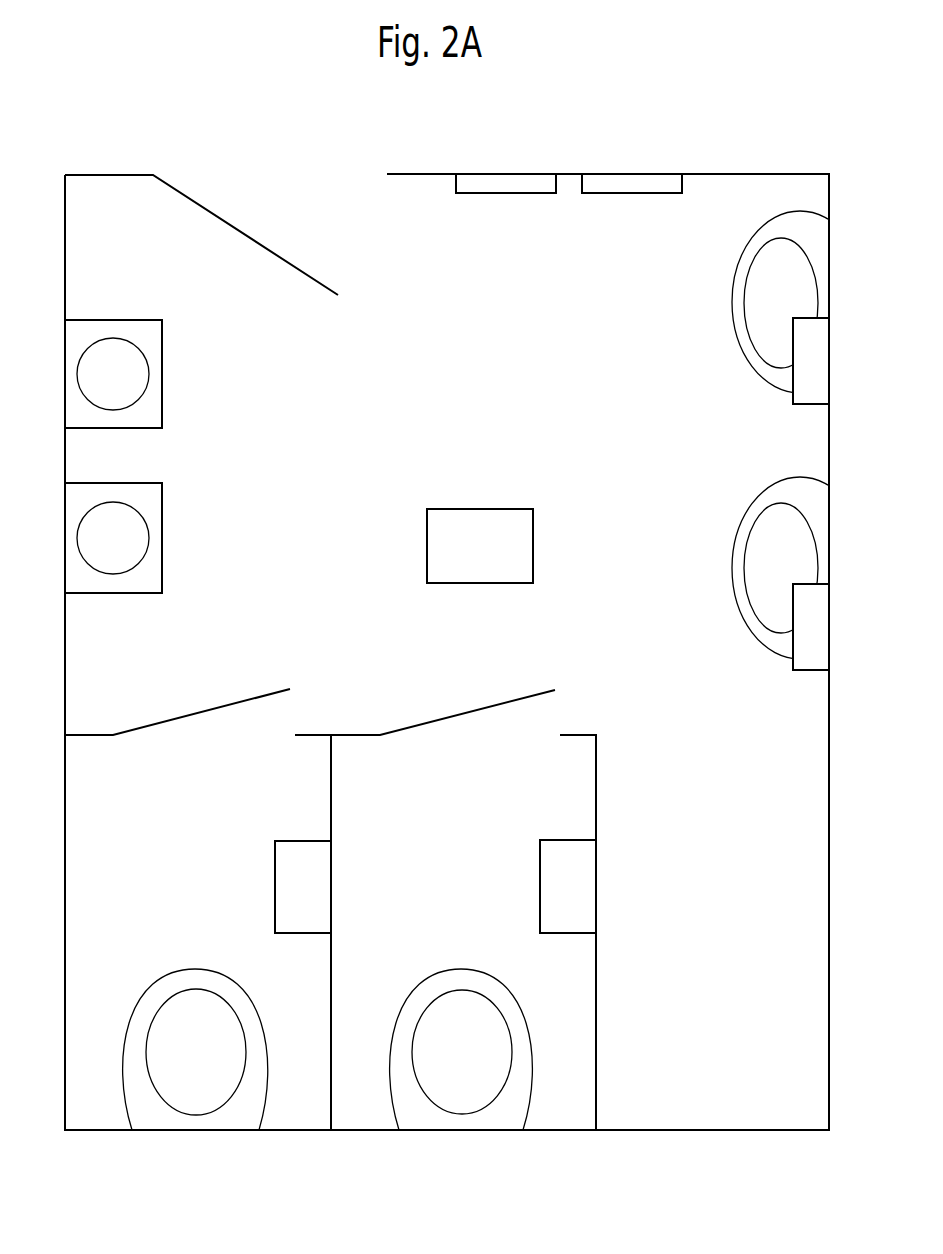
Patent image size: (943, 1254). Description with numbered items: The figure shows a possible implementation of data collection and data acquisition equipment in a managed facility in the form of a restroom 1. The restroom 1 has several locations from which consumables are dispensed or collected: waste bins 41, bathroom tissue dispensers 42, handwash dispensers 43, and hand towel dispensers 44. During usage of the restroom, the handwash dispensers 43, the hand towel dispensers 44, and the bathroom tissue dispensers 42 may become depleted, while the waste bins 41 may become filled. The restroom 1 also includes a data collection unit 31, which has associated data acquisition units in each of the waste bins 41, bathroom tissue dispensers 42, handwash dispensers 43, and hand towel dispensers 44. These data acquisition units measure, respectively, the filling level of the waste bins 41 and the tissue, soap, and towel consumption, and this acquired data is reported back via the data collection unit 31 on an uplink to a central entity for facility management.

The restroom 1 is at (310, 417).
The data collection unit 31 is at (498, 509).
The waste bins 41 is at (162, 402).
The bathroom tissue dispensers 42 is at (275, 855).
The handwash dispensers 43 is at (805, 404).
The hand towel dispensers 44 is at (543, 193).